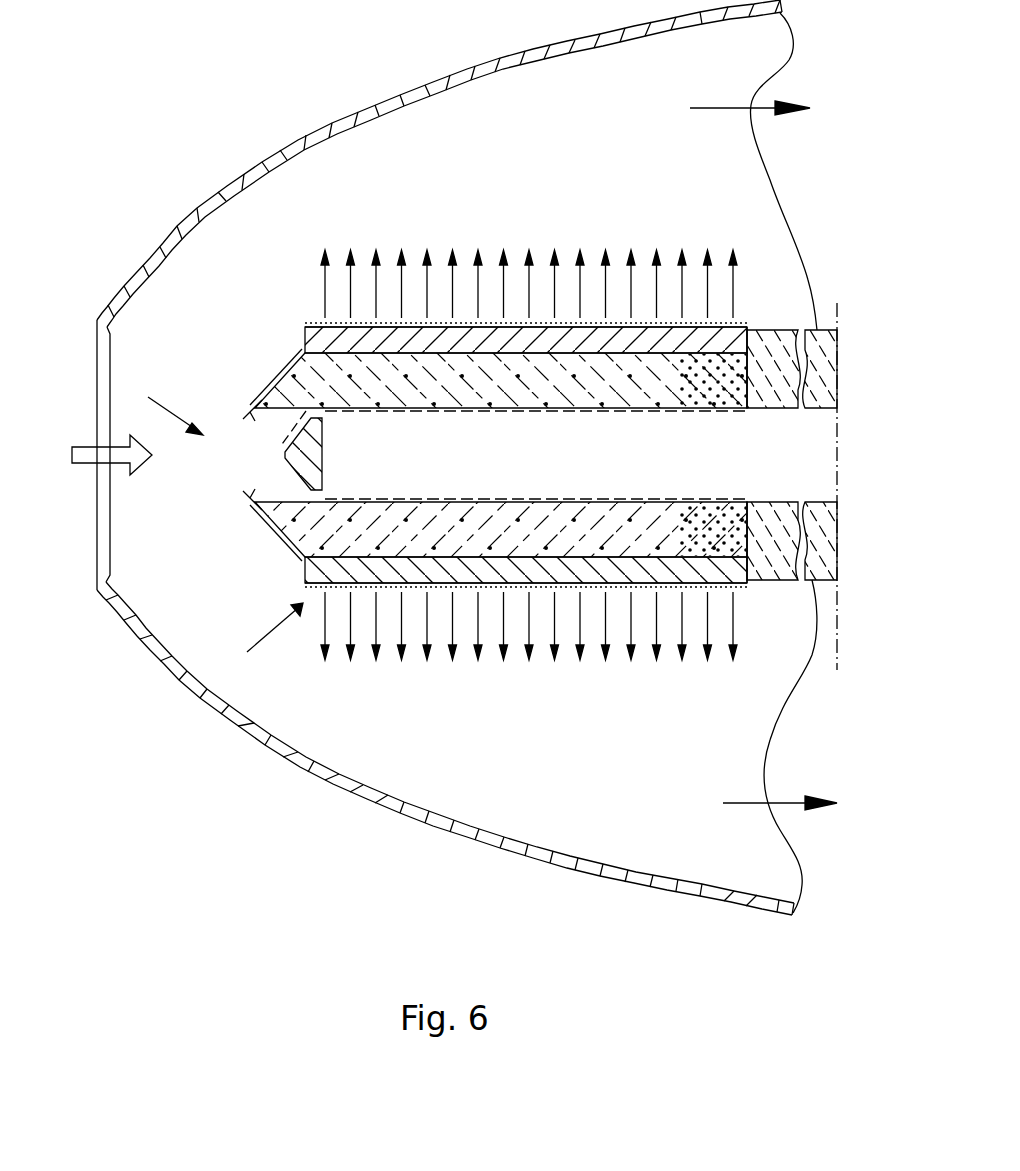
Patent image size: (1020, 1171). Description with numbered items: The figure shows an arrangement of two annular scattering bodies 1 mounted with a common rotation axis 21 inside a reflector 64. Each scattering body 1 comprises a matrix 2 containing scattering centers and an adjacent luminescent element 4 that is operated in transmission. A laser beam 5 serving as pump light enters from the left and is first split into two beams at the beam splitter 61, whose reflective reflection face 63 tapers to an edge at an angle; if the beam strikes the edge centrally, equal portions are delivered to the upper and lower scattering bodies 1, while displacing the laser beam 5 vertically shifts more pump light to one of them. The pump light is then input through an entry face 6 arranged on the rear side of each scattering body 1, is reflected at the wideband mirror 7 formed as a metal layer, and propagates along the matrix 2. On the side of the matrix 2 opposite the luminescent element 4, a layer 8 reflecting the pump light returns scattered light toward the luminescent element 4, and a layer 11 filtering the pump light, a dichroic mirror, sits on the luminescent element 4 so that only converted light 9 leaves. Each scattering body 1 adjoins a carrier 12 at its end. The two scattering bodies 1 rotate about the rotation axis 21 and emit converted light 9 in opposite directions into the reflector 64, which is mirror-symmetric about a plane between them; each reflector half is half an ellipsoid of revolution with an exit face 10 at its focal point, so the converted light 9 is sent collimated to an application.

The scattering body 1 is at (488, 500).
The matrix 2 is at (560, 392).
The luminescent element 4 is at (306, 327).
The laser beam 5 is at (97, 455).
The entry face 6 is at (257, 416).
The wideband mirror 7 is at (287, 365).
The layer reflecting the pump light 8 is at (597, 412).
The converted light 9 is at (325, 277).
The exit face 10 is at (497, 326).
The layer filtering the pump light 11 is at (615, 324).
The carrier 12 is at (810, 572).
The rotation axis 21 is at (837, 643).
The beam splitter 61 is at (161, 403).
The reflection face 63 is at (295, 475).
The reflector 64 is at (390, 110).